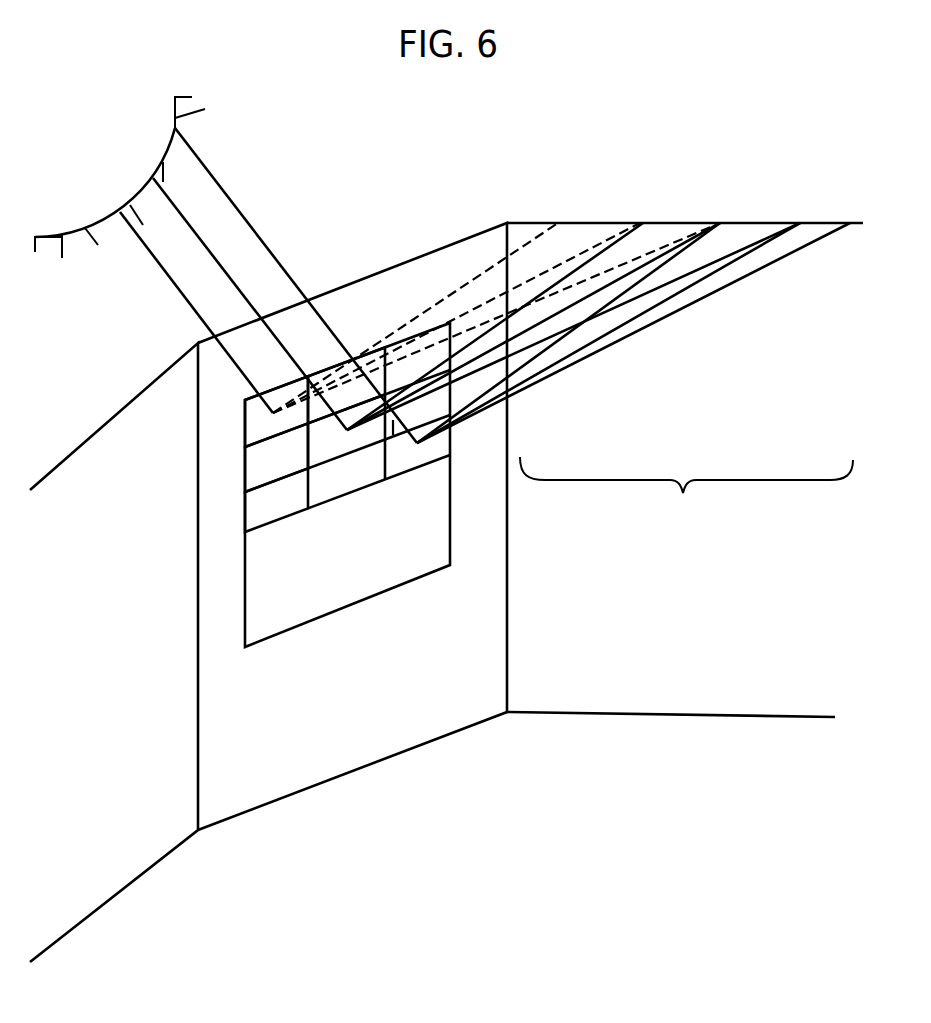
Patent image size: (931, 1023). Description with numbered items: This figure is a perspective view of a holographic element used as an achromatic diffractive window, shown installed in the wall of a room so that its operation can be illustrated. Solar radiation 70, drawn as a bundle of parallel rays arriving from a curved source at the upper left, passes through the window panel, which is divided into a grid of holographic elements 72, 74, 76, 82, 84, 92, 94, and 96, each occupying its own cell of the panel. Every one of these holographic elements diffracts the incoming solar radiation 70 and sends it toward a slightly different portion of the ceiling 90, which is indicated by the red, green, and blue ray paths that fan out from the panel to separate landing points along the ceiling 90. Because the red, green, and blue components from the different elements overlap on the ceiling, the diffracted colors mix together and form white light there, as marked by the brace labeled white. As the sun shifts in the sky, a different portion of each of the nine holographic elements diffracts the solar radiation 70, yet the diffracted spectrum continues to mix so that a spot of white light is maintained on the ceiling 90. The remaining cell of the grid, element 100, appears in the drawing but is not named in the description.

The solar radiation 70 is at (158, 257).
The holographic element 72 is at (272, 434).
The holographic element 74 is at (280, 472).
The holographic element 76 is at (280, 514).
The holographic element 82 is at (332, 369).
The holographic element 84 is at (341, 452).
The ceiling 90 is at (763, 223).
The holographic element 92 is at (423, 347).
The holographic element 94 is at (393, 430).
The holographic element 96 is at (443, 443).
The filter segment 100 is at (364, 484).